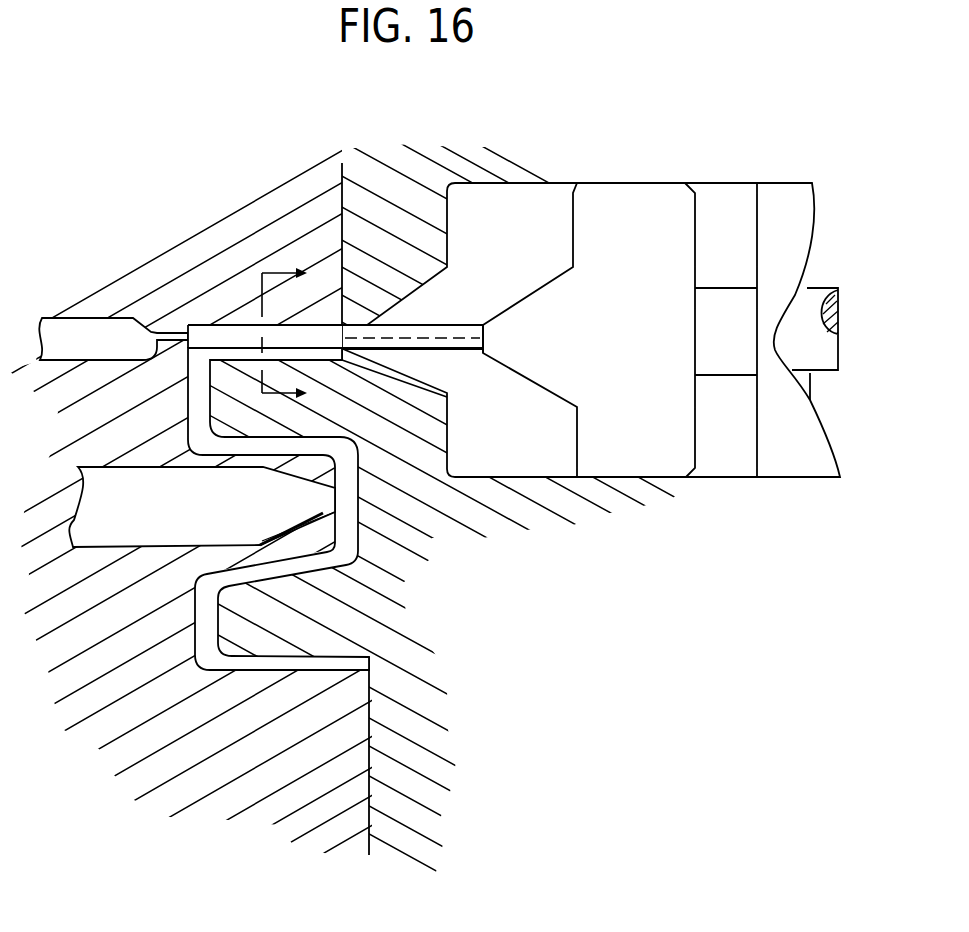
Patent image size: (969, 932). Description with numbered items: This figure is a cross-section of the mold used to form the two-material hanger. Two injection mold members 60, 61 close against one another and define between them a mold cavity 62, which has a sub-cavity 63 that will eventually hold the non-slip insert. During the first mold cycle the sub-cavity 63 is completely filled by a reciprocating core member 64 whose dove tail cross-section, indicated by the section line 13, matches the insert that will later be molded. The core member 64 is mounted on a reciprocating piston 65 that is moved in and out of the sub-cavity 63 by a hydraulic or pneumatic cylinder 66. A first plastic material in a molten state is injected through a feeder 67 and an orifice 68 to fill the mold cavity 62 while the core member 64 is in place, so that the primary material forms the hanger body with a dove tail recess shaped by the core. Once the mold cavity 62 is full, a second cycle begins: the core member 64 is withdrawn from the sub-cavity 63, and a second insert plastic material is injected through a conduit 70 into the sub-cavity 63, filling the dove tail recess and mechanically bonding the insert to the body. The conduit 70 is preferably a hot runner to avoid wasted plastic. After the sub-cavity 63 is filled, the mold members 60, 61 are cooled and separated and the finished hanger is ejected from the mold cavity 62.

The section line 13- 13 is at (298, 333).
The injection mold 60 is at (515, 755).
The injection mold 61 is at (228, 763).
The mold cavity 62 is at (196, 608).
The sub-cavity 63 is at (277, 337).
The reciprocating core member 64 is at (134, 320).
The reciprocating piston 65 is at (640, 207).
The hydraulic or pneumatic cylinder 66 is at (787, 273).
The feeder 67 is at (101, 497).
The orifice 68 is at (335, 497).
The conduit 70 is at (78, 330).